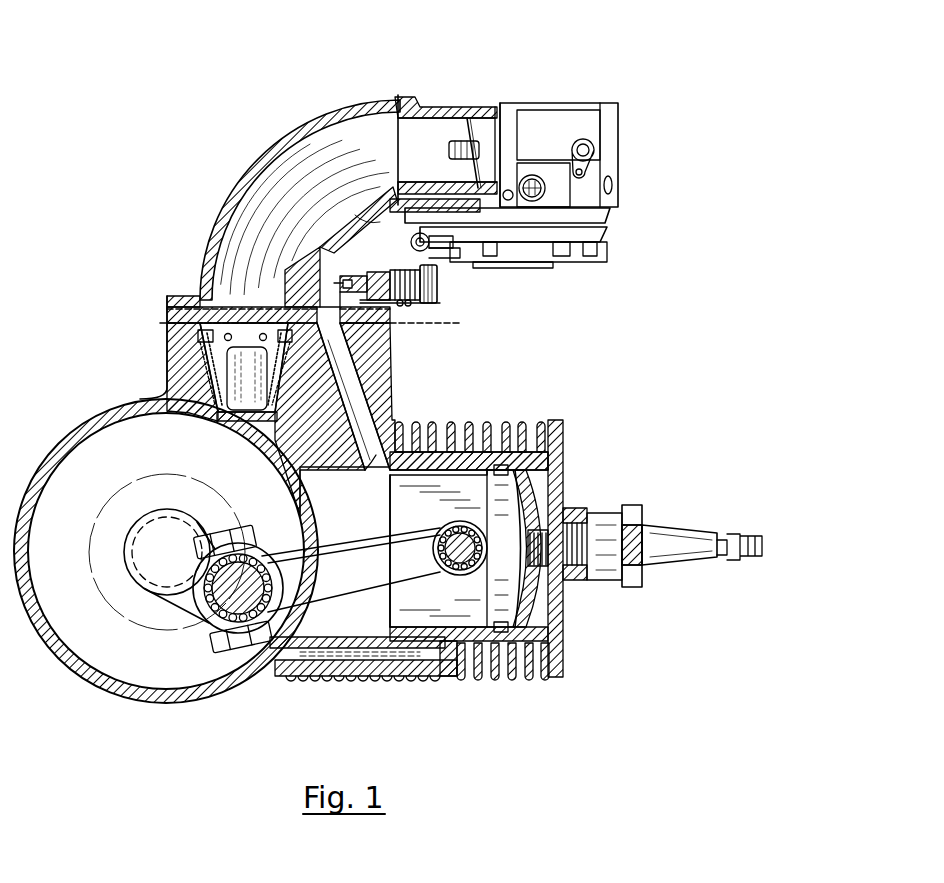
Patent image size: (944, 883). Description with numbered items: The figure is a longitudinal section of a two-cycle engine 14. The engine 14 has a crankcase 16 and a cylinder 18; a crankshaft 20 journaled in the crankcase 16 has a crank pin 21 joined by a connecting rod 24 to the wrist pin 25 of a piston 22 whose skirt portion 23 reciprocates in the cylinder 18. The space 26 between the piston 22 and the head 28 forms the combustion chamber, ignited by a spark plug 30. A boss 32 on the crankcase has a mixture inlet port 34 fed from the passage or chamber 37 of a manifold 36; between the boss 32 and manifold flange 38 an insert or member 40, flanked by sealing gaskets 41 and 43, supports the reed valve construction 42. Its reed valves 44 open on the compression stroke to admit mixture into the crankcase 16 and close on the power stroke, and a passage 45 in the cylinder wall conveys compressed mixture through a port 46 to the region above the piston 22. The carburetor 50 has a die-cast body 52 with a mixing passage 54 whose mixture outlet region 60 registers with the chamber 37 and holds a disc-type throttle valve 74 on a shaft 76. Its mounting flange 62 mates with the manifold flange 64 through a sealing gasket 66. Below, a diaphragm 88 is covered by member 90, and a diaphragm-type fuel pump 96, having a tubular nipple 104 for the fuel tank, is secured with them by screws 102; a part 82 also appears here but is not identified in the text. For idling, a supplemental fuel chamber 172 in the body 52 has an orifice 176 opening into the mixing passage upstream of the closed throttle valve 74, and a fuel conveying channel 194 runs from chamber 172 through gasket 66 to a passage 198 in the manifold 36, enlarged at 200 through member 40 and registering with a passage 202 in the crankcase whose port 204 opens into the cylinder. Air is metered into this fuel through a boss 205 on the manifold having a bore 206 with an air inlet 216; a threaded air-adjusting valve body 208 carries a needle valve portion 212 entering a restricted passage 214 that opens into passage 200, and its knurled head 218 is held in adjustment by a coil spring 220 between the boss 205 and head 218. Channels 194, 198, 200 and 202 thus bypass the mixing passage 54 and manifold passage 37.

The engine 14 is at (572, 408).
The crankcase 16 is at (97, 693).
The cylinder 18 is at (550, 456).
The crankshaft 20 is at (140, 593).
The crank pin 21 is at (250, 580).
The piston 22 is at (533, 573).
The skirt portion 23 is at (392, 480).
The connecting rod 24 is at (350, 548).
The wrist pin 25 is at (446, 547).
The space 26 is at (540, 590).
The head 28 is at (560, 613).
The spark plug 30 is at (648, 510).
The boss 32 is at (182, 370).
The mixture inlet port 34 is at (200, 336).
The manifold 36 is at (300, 137).
The manifold passage 37 is at (300, 198).
The flange 38 is at (178, 290).
The insert 40 is at (167, 309).
The sealing gasket 41 is at (167, 301).
The reed valve construction 42 is at (248, 424).
The sealing gasket 43 is at (167, 321).
The reed valves 44 is at (243, 375).
The mixture conveying passage 45 is at (367, 655).
The port 46 is at (430, 624).
The carburetor 50 is at (625, 103).
The body 52 is at (455, 120).
The mixing passage 54 is at (497, 133).
The mixture outlet region 60 is at (410, 137).
The mounting flange 62 is at (407, 100).
The flange 64 is at (395, 100).
The sealing gasket 66 is at (397, 97).
The throttle valve 74 is at (470, 140).
The shaft 76 is at (482, 150).
The lower body 82 is at (497, 247).
The diaphragm 88 is at (483, 200).
The cover member 90 is at (612, 216).
The fuel pump construction 96 is at (617, 236).
The screws 102 is at (573, 252).
The tubular nipple 104 is at (433, 252).
The supplemental fuel chamber 172 is at (500, 187).
The orifice 176 is at (477, 193).
The fuel conveying channel 194 is at (443, 193).
The fuel conveying passage 198 is at (363, 222).
The passage 200 is at (347, 283).
The passage 202 is at (352, 383).
The port 204 is at (377, 420).
The boss 205 is at (366, 305).
The bore 206 is at (360, 265).
The air-adjusting valve body 208 is at (420, 300).
The needle valve portion 212 is at (333, 280).
The restricted passage 214 is at (340, 290).
The air inlet 216 is at (368, 305).
The knurled head 218 is at (433, 301).
The coil spring 220 is at (403, 301).